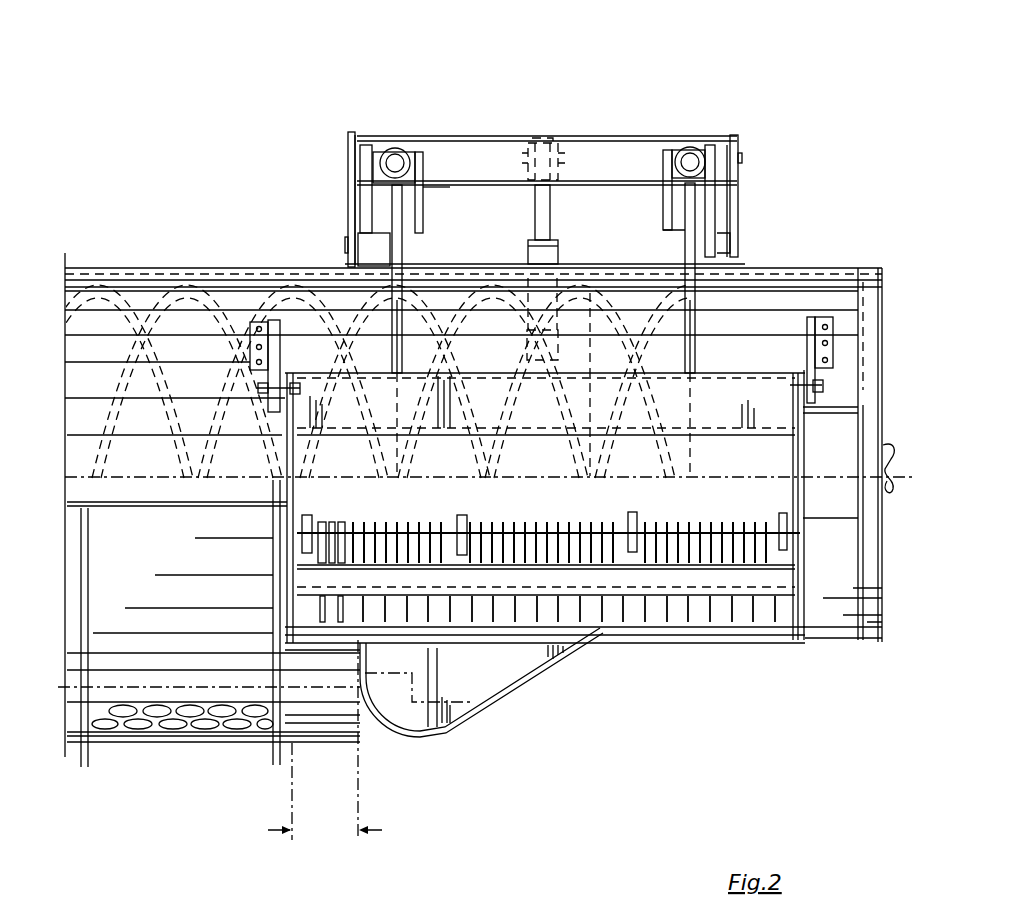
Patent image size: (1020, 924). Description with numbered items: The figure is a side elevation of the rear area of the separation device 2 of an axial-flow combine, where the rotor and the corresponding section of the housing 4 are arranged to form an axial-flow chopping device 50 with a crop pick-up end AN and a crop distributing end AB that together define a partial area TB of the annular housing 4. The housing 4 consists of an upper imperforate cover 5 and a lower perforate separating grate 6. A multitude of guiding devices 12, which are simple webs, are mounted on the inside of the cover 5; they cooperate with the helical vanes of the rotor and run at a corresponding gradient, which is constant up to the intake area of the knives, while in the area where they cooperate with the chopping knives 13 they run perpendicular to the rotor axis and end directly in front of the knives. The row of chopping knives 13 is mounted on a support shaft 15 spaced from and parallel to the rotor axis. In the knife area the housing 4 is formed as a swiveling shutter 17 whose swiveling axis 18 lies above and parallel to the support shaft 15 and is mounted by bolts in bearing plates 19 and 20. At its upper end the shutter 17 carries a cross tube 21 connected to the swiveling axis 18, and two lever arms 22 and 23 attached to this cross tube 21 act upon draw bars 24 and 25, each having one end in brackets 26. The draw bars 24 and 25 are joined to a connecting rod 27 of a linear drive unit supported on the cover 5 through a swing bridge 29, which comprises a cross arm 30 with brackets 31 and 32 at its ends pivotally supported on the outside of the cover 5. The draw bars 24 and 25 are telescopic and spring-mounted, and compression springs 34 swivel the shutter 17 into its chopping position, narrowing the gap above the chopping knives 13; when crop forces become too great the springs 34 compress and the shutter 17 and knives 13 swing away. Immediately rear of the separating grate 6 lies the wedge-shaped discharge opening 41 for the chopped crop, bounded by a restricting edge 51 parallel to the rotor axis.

The separation device 2 is at (70, 259).
The housing 4 is at (142, 296).
The imperforate cover 5 is at (228, 296).
The perforate separating grate 6 is at (137, 692).
The guiding devices 12 is at (340, 262).
The chopping knives 13 is at (513, 598).
The support shaft 15 is at (700, 530).
The swiveling shutter 17 is at (785, 477).
The swiveling axis 18 is at (258, 395).
The bearing plate 19 is at (283, 318).
The bearing plate 20 is at (788, 318).
The cross tube 21 is at (723, 393).
The lever arm 22 is at (399, 252).
The lever arm 23 is at (693, 222).
The draw bar 24 is at (397, 162).
The draw bar 25 is at (691, 160).
The brackets 26 is at (420, 200).
The connecting rod 27 is at (552, 213).
The swing bridge 29 is at (598, 134).
The cross arm 30 is at (492, 153).
The bracket 31 is at (352, 172).
The bracket 32 is at (732, 205).
The compression springs 34 is at (395, 162).
The wedge-shaped discharge opening 41 is at (484, 680).
The axial-flow chopping device 50 is at (726, 645).
The restricting edge 51 is at (622, 643).
The crop distributing end AB is at (840, 643).
The crop pick-up end AN is at (303, 643).
The partial area TB is at (325, 741).